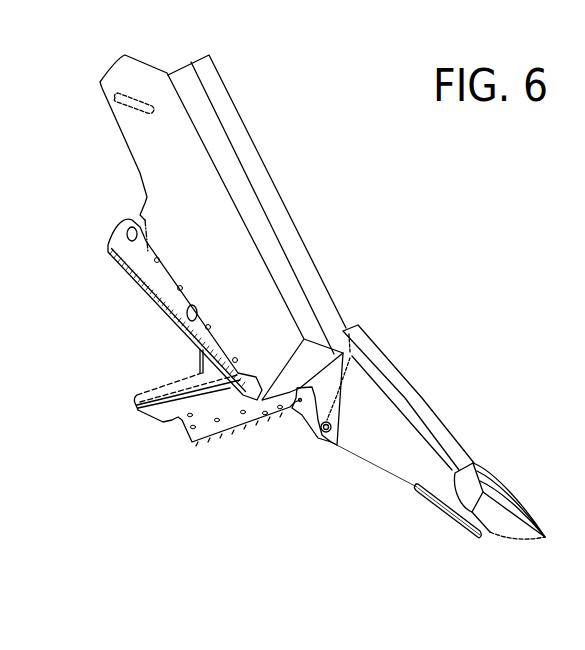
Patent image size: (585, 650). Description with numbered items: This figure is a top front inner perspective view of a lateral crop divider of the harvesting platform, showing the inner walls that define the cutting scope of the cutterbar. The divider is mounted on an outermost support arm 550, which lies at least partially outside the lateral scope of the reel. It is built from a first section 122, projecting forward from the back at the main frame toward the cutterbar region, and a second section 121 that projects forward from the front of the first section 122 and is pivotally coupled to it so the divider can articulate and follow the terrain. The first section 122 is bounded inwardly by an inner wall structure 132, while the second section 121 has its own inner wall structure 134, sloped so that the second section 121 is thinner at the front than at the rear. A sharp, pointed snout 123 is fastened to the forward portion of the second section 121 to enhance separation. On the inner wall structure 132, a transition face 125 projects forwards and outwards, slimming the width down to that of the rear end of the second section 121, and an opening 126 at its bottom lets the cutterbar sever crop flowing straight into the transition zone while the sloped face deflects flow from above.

The second section 121 is at (383, 364).
The first section 122 is at (208, 84).
The snout 123 is at (490, 527).
The transition face 125 is at (312, 359).
The opening 126 is at (289, 404).
The inner wall structure 132 is at (190, 230).
The inner wall structure 134 is at (383, 445).
The outermost support arm 550 is at (143, 269).